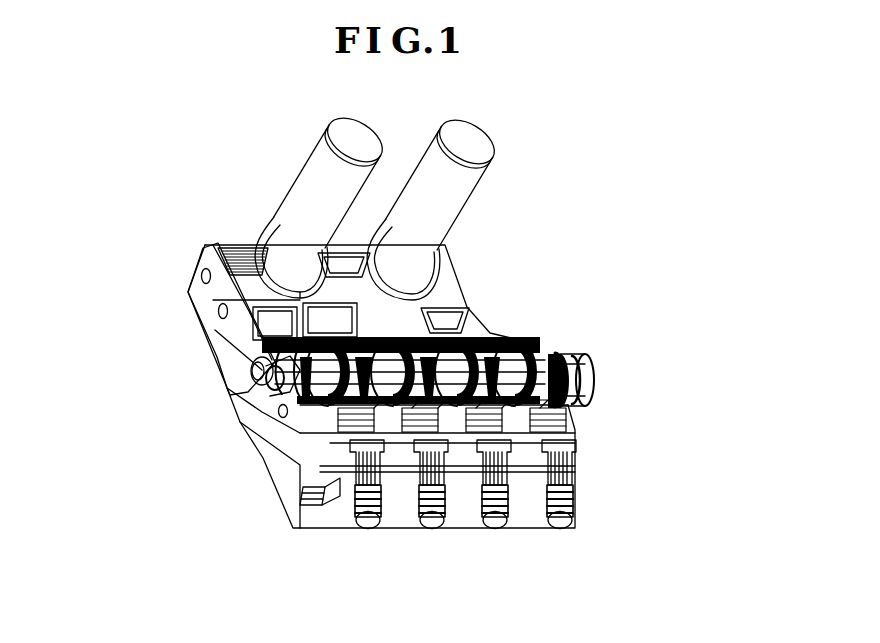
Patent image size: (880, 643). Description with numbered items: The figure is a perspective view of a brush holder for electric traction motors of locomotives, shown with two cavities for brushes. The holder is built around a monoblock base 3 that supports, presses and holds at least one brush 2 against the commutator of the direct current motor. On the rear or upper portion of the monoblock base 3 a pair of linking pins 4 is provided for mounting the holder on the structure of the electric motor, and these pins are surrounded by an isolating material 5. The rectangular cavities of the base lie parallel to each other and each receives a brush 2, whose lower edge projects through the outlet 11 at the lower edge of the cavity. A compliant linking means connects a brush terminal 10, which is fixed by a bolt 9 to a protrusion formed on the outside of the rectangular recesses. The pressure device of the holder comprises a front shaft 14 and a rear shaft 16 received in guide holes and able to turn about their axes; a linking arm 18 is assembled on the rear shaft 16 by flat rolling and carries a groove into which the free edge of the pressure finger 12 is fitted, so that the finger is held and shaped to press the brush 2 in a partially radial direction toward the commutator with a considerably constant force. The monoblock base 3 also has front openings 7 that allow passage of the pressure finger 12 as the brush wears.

The brush 2 is at (317, 415).
The monoblock base 3 is at (225, 343).
The linking pin 4 is at (313, 187).
The isolating material 5 is at (273, 228).
The front openings 7 is at (298, 490).
The bolt 9 is at (372, 512).
The brush terminal 10 is at (395, 507).
The outlet 11 is at (606, 410).
The pressure finger 12 is at (594, 375).
The front shaft 14 is at (278, 414).
The rear shaft 16 is at (250, 371).
The linking arm 18 is at (255, 384).